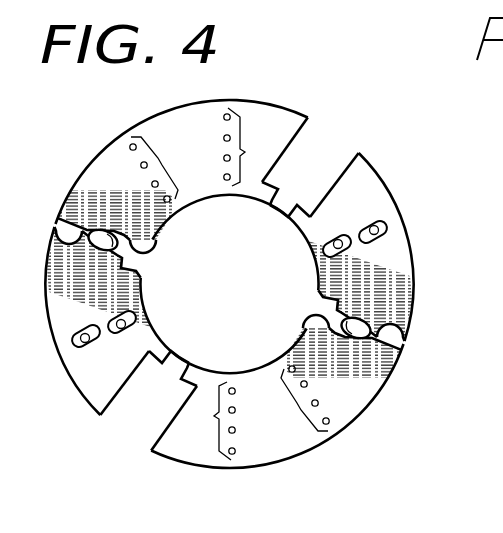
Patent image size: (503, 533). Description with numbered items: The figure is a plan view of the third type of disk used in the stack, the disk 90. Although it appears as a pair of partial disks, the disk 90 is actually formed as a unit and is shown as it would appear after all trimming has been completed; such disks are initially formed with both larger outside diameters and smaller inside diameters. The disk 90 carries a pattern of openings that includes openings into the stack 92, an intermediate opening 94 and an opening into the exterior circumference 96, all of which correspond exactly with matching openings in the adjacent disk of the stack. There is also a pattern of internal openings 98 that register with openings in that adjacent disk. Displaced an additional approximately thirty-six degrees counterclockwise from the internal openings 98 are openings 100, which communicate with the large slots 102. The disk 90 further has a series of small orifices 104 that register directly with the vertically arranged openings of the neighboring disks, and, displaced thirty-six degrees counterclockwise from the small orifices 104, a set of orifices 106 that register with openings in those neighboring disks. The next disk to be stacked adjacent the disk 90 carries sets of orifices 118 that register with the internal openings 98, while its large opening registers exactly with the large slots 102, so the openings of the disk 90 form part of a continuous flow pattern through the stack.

The disk 90 is at (400, 189).
The openings into the stack 92 is at (133, 257).
The intermediate opening 94 is at (351, 337).
The opening into the exterior circumference 96 is at (393, 336).
The internal openings 98 is at (366, 232).
The openings 100 is at (289, 208).
The large slots 102 is at (348, 162).
The small orifices 104 is at (245, 152).
The orifices 106 is at (160, 160).
The orifices 118 is at (502, 286).